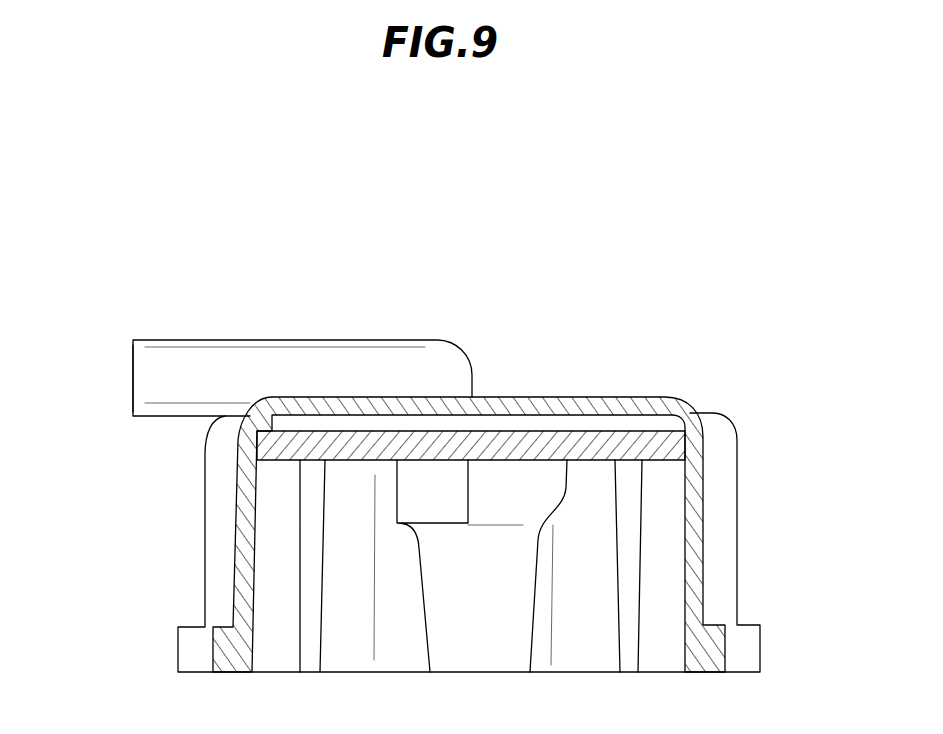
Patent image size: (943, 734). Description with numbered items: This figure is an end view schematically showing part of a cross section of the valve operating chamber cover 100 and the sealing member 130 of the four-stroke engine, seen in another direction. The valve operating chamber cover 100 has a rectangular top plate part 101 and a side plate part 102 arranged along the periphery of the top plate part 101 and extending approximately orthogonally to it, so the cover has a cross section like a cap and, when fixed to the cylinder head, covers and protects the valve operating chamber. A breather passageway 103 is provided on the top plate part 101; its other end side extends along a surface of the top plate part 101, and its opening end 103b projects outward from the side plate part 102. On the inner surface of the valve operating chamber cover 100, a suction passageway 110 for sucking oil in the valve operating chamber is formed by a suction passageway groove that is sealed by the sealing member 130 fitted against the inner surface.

The valve operating chamber cover 100 is at (668, 313).
The top plate part 101 is at (638, 400).
The side plate part 102 is at (738, 557).
The breather passageway 103 is at (320, 362).
The opening end 103b is at (133, 381).
The suction passageway 110 is at (633, 423).
The sealing member 130 is at (494, 430).